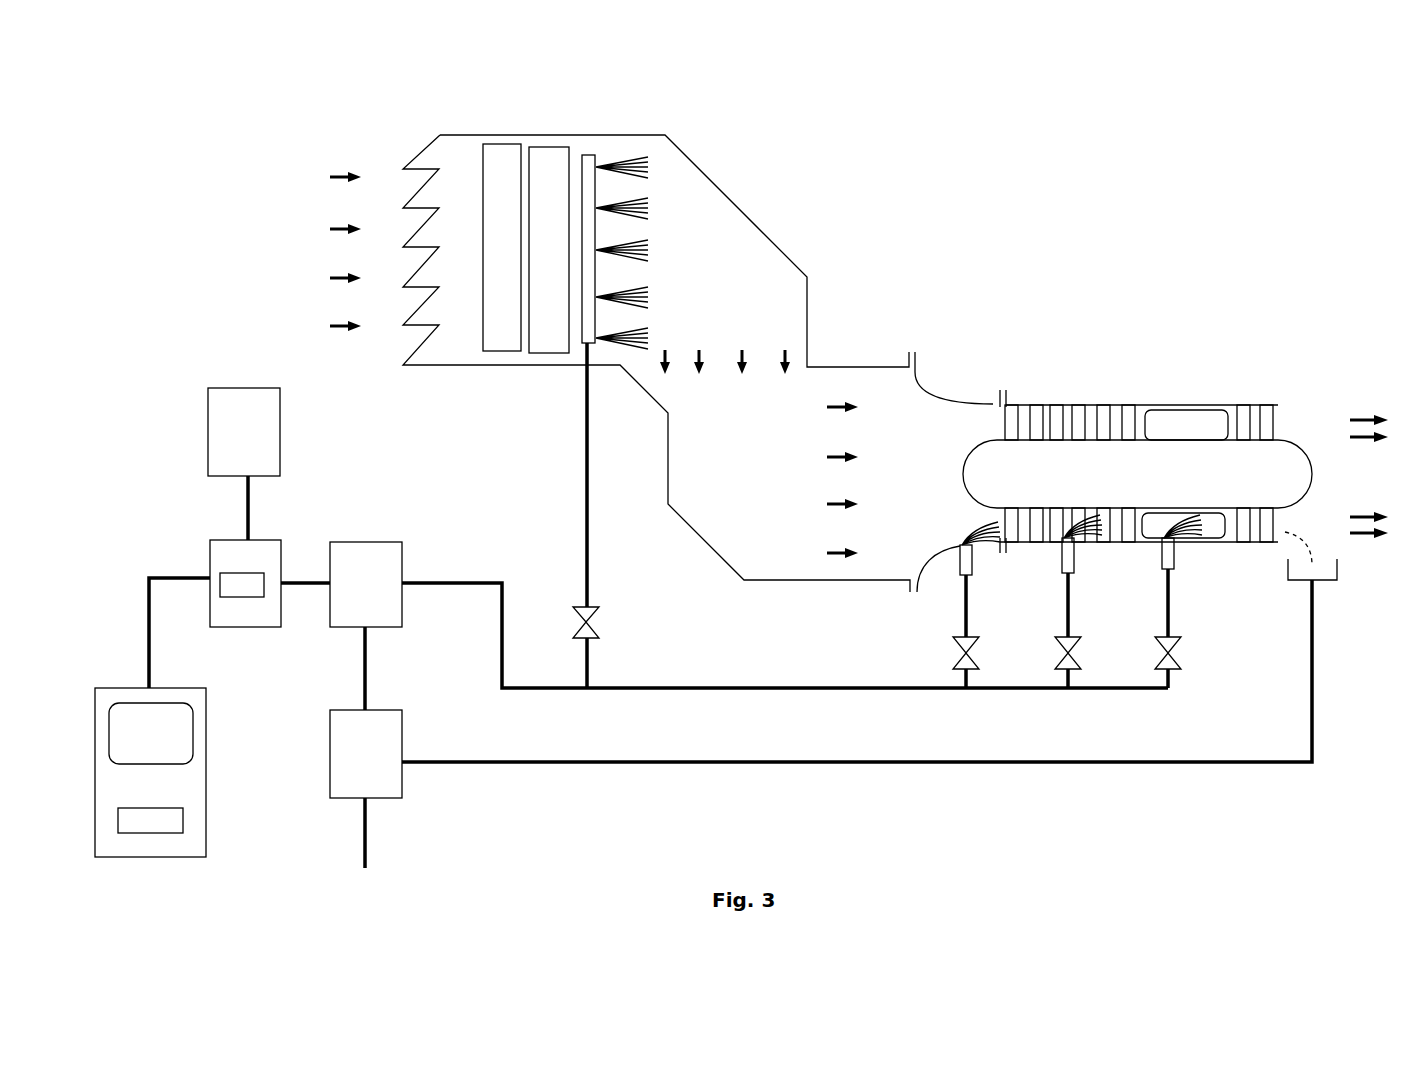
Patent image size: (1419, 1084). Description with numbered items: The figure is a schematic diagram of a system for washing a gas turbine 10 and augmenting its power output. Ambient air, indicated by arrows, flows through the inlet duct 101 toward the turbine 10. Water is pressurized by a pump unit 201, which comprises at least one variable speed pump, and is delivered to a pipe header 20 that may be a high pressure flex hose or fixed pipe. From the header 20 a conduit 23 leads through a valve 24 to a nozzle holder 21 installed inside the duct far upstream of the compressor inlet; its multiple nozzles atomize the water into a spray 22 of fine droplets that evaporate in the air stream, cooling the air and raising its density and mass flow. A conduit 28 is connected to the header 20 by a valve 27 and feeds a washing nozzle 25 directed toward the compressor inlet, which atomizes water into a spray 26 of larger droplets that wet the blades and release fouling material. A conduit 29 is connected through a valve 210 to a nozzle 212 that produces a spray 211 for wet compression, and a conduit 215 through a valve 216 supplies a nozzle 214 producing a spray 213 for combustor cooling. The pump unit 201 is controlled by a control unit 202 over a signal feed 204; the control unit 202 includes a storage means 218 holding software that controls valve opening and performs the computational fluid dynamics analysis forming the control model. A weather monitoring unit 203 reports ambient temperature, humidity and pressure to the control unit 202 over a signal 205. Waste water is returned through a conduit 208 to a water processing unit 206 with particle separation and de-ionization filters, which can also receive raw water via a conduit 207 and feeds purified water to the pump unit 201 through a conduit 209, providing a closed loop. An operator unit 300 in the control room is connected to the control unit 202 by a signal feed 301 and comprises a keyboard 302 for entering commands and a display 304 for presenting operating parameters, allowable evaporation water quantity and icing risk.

The gas turbine 10 is at (1103, 460).
The pipe header 20 is at (440, 582).
The nozzle holder 21 is at (588, 157).
The spray 22 is at (635, 160).
The conduit 23 is at (585, 452).
The valve 24 is at (592, 610).
The nozzle 25 is at (965, 559).
The spray 26 is at (973, 545).
The valve 27 is at (968, 645).
The conduit 28 is at (960, 615).
The conduit 29 is at (1067, 597).
The duct 101 is at (788, 257).
The pump unit 201 is at (378, 557).
The control unit 202 is at (258, 552).
The weather monitoring unit 203 is at (260, 408).
The signal feed 204 is at (302, 588).
The signal 205 is at (250, 492).
The water processing unit 206 is at (390, 788).
The conduit 207 is at (360, 817).
The conduit 208 is at (478, 767).
The conduit 209 is at (367, 665).
The valve 210 is at (1073, 643).
The spray 211 is at (1090, 543).
The nozzle 212 is at (1070, 570).
The spray 213 is at (1180, 540).
The nozzle 214 is at (1170, 562).
The conduit 215 is at (1173, 610).
The valve 216 is at (1168, 667).
The storage means 218 is at (248, 588).
The operator unit 300 is at (194, 773).
The signal feed 301 is at (165, 573).
The keyboard 302 is at (168, 817).
The display 304 is at (167, 731).